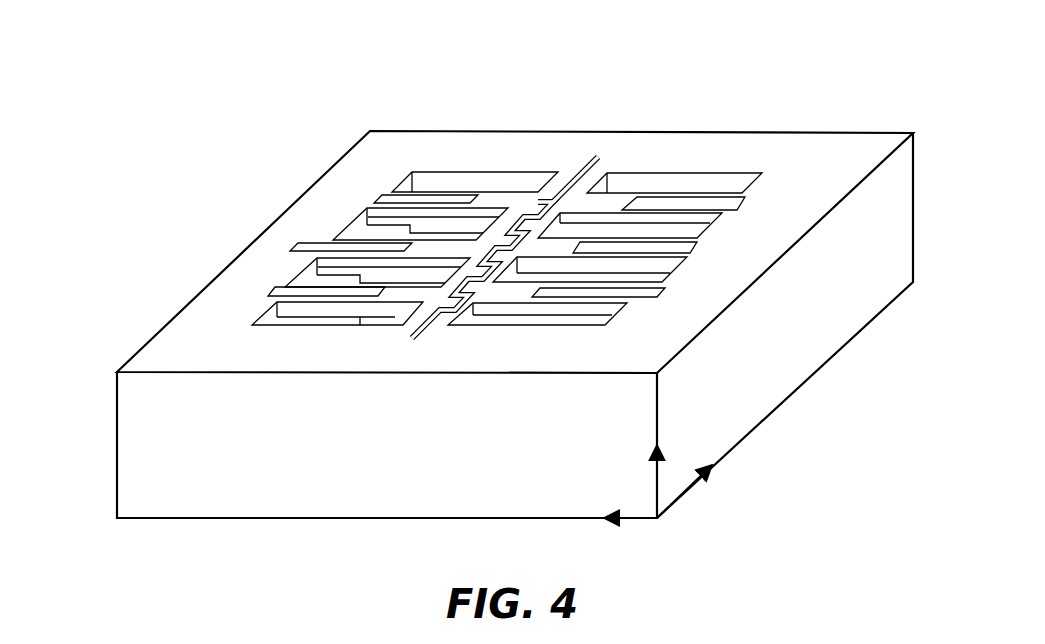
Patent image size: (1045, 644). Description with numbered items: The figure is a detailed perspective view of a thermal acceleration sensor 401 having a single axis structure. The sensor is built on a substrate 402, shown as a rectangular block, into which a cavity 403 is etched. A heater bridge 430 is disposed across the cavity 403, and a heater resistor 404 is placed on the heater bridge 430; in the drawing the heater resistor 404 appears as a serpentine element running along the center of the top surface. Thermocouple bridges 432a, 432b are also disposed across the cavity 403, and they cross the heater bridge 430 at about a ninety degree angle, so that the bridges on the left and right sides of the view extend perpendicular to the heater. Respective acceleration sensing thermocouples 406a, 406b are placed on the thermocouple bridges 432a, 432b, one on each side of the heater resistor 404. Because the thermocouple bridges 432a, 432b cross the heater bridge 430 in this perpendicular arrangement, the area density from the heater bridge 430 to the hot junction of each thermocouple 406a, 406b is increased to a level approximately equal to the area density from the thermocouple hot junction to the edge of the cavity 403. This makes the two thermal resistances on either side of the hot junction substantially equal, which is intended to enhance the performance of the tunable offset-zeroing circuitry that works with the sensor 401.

The thermal acceleration sensor 401 is at (96, 76).
The substrate 402 is at (548, 501).
The cavity 403 is at (286, 316).
The heater resistor 404 is at (582, 178).
The acceleration sensing thermocouple 406a is at (357, 216).
The acceleration sensing thermocouple 406b is at (705, 237).
The heater bridge 430 is at (512, 217).
The thermocouple bridge 432a is at (403, 290).
The thermocouple bridge 432b is at (608, 203).